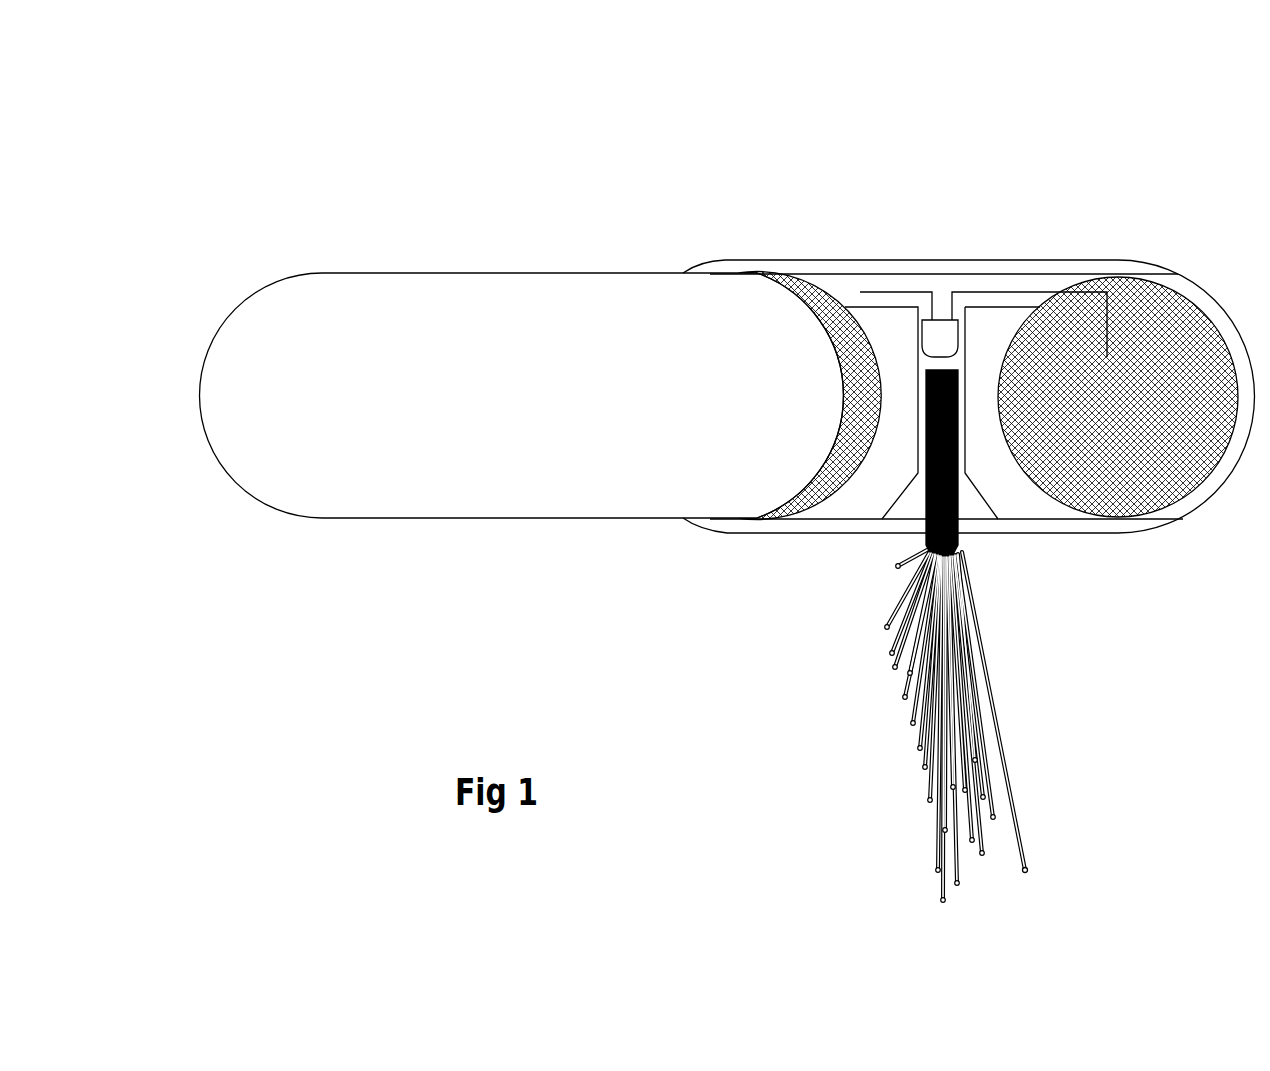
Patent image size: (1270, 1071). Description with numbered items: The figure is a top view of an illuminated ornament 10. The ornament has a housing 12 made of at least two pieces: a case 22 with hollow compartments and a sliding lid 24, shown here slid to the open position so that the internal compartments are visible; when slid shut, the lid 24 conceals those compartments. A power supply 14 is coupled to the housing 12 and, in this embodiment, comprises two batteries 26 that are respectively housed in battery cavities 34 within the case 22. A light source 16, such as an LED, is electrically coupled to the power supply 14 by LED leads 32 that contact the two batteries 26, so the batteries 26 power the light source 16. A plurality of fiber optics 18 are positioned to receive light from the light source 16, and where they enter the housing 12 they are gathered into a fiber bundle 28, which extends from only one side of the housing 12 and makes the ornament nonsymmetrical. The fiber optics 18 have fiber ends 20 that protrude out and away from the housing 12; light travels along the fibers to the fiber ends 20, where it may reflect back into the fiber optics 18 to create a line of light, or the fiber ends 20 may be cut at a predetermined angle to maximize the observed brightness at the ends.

The illuminated ornament 10 is at (647, 183).
The housing 12 is at (762, 535).
The power supply 14 is at (788, 252).
The light source 16 is at (940, 320).
The fiber optics 18 is at (1005, 753).
The fiber ends 20 is at (1025, 870).
The case 22 is at (1052, 260).
The sliding lid 24 is at (533, 500).
The batteries 26 is at (1176, 327).
The fiber bundle 28 is at (963, 538).
The LED leads 32 is at (860, 293).
The battery cavities 34 is at (867, 488).